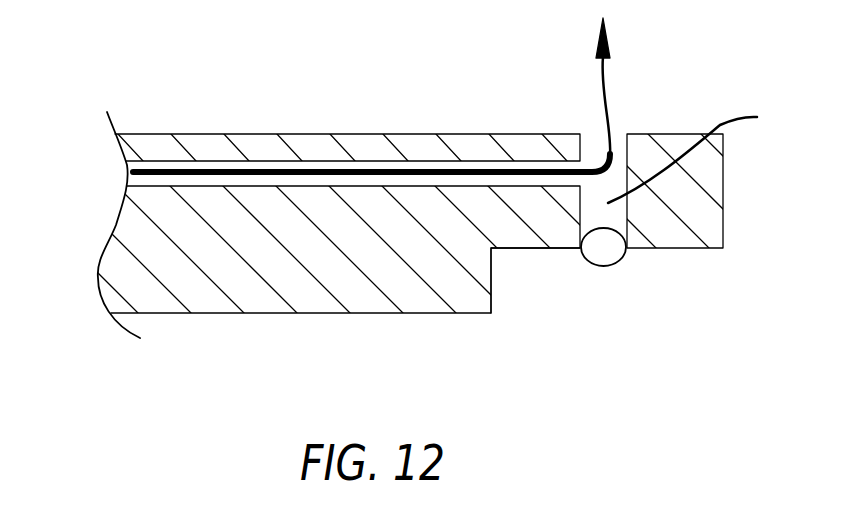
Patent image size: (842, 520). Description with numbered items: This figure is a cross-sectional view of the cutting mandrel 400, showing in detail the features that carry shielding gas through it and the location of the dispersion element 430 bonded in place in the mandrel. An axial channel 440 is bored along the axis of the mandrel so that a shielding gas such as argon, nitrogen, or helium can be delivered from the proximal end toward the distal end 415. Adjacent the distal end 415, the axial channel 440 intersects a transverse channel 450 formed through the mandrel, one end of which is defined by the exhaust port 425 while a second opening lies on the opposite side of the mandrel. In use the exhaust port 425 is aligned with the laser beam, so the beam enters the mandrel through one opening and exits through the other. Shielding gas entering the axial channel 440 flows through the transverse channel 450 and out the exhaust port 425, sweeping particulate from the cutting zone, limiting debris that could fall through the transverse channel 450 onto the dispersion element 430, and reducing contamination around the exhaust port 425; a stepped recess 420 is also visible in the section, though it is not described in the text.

The cutting mandrel 400 is at (288, 313).
The distal end 415 is at (723, 212).
The recess / step 420 is at (558, 249).
The exhaust port 425 is at (617, 135).
The dispersion element 430 is at (617, 306).
The axial channel 440 is at (133, 167).
The transverse channel 450 is at (700, 154).